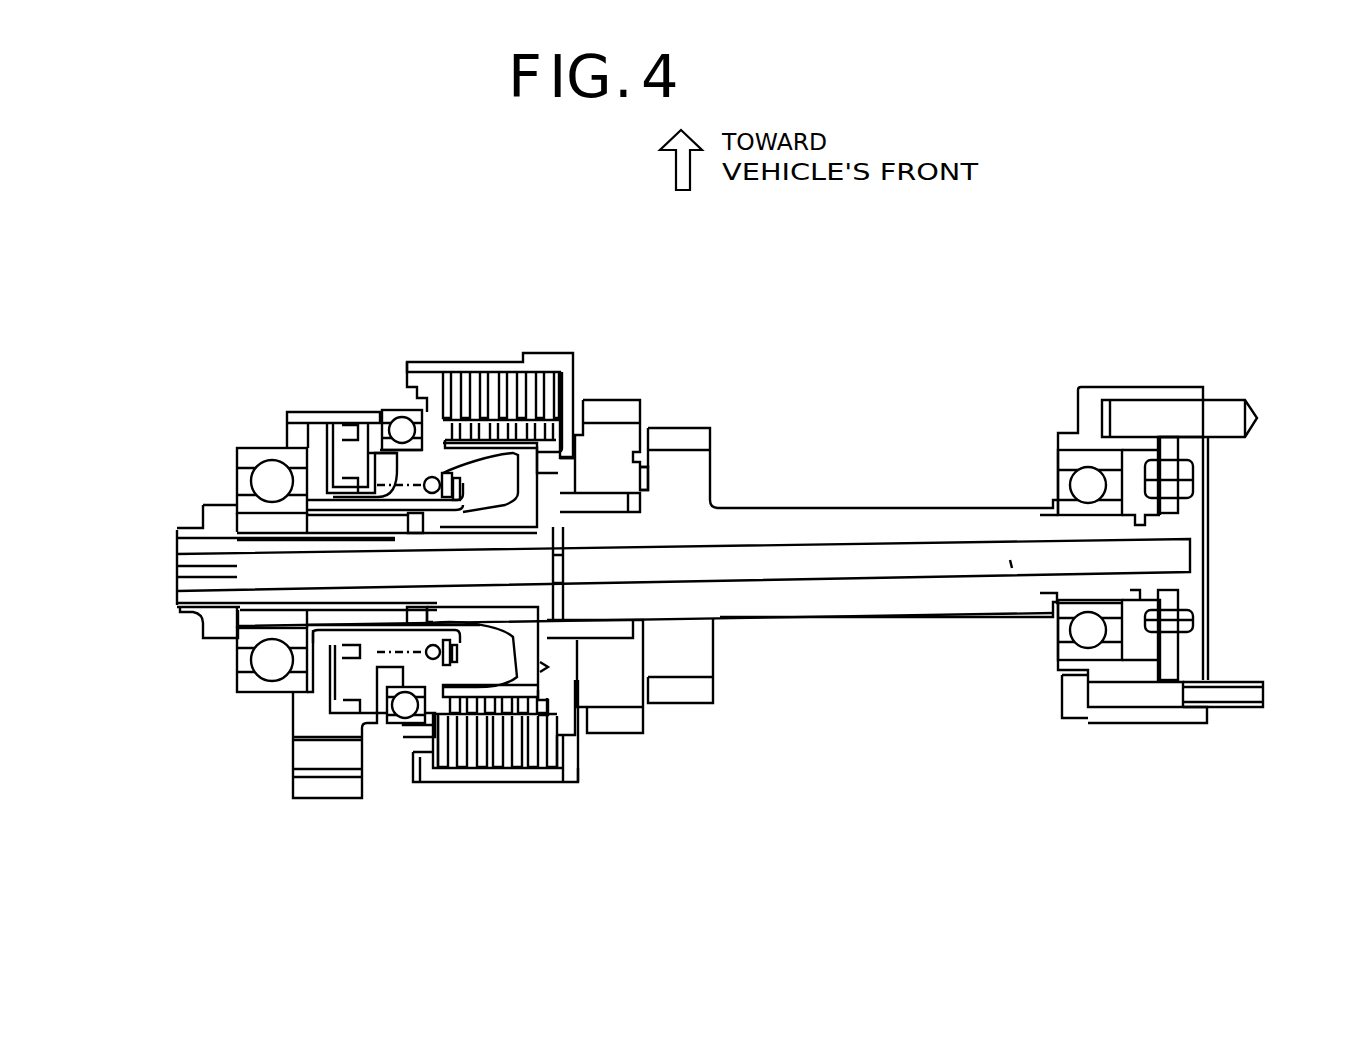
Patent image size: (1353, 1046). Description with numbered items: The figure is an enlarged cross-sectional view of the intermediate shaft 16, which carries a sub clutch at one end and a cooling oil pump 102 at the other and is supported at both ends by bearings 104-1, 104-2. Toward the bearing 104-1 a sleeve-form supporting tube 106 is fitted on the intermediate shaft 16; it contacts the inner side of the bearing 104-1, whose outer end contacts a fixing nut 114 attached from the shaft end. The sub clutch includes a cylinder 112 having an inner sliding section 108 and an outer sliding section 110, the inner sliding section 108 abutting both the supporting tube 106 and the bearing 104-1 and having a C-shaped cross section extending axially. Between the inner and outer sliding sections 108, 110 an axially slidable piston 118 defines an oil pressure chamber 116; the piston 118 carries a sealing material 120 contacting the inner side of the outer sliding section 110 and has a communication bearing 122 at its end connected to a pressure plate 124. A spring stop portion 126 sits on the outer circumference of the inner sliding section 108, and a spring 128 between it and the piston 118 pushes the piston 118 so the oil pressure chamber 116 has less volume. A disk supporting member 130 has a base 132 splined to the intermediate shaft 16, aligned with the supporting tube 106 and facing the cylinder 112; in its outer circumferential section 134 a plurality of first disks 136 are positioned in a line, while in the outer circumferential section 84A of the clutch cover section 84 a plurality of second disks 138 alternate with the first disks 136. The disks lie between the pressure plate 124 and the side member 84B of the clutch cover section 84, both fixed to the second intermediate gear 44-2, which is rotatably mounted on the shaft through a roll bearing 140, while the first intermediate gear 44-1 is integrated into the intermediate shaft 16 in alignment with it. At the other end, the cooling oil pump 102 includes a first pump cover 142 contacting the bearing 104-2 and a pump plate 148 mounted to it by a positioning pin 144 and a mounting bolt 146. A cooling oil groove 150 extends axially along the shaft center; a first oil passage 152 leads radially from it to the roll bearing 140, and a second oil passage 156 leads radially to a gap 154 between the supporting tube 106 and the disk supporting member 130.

The intermediate shaft 16 is at (929, 506).
The first intermediate gear 44-1 is at (690, 492).
The second intermediate gear 44-2 is at (600, 438).
The clutch cover section 84 is at (518, 356).
The outer circumferential section of the clutch cover section 84A is at (460, 362).
The side member of the clutch cover section 84B is at (542, 425).
The cooling oil pump 102 is at (1193, 360).
The bearing 104-1 is at (240, 470).
The bearing 104-2 is at (1062, 458).
The supporting tube 106 is at (333, 620).
The inner sliding section 108 is at (355, 500).
The outer sliding section 110 is at (340, 414).
The cylinder 112 is at (297, 403).
The fixing nut 114 is at (205, 625).
The oil pressure chamber 116 is at (335, 450).
The piston 118 is at (364, 450).
The sealing material 120 is at (358, 425).
The communication bearing 122 is at (392, 724).
The pressure plate 124 is at (430, 733).
The spring stop portion 126 is at (472, 480).
The spring 128 is at (410, 447).
The disk supporting member 130 is at (545, 660).
The base of the disk supporting member 132 is at (510, 622).
The outer circumferential section of the disk supporting member 134 is at (552, 708).
The first disks 136 is at (545, 742).
The second disks 138 is at (517, 760).
The roll bearing 140 is at (607, 493).
The first pump cover 142 is at (1136, 456).
The positioning pin 144 is at (1230, 408).
The mounting bolt 146 is at (1238, 692).
The pump plate 148 is at (1206, 452).
The cooling oil groove 150 is at (1012, 566).
The first oil passage 152 is at (563, 600).
The gap 154 is at (410, 522).
The second oil passage 156 is at (290, 610).